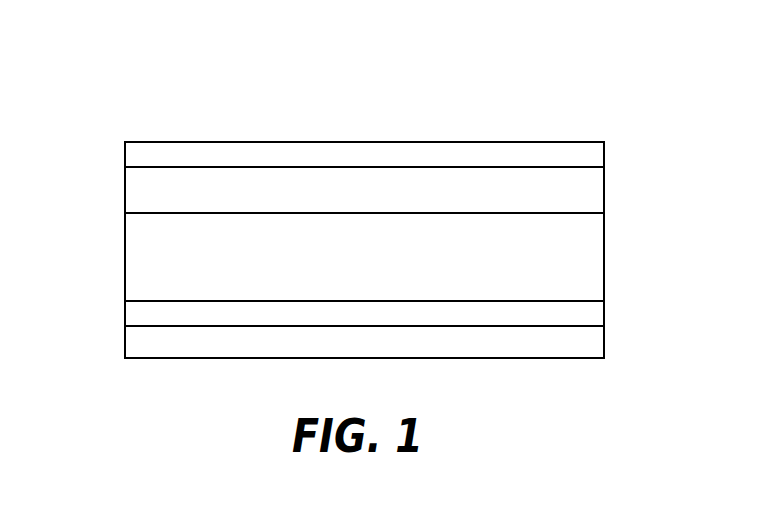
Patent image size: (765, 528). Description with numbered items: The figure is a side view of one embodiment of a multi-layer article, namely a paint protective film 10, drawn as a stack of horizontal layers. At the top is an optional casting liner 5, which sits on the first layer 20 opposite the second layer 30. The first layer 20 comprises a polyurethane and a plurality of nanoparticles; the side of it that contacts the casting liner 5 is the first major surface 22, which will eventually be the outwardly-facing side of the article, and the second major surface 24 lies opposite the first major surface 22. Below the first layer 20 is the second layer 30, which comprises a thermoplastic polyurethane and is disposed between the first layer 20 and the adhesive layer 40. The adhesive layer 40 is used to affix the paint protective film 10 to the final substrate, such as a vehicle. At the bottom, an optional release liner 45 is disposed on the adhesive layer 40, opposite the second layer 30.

The paint protective film 10 is at (541, 97).
The casting liner 5 is at (137, 153).
The first layer 20 is at (137, 193).
The first major surface 22 is at (587, 167).
The second major surface 24 is at (587, 213).
The second layer 30 is at (137, 262).
The adhesive layer 40 is at (137, 313).
The release liner 45 is at (595, 346).